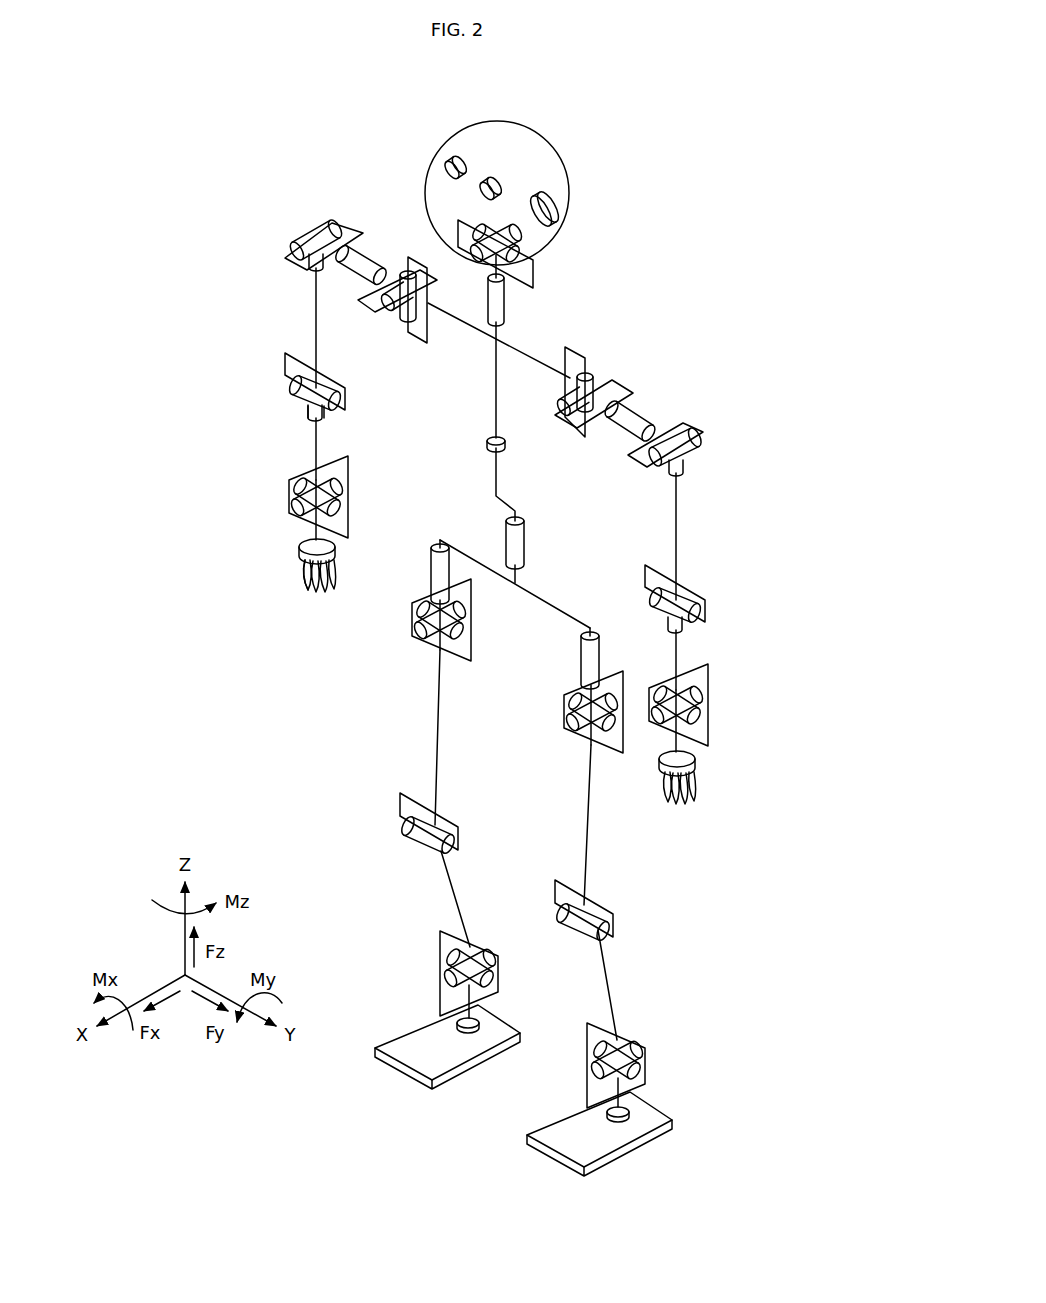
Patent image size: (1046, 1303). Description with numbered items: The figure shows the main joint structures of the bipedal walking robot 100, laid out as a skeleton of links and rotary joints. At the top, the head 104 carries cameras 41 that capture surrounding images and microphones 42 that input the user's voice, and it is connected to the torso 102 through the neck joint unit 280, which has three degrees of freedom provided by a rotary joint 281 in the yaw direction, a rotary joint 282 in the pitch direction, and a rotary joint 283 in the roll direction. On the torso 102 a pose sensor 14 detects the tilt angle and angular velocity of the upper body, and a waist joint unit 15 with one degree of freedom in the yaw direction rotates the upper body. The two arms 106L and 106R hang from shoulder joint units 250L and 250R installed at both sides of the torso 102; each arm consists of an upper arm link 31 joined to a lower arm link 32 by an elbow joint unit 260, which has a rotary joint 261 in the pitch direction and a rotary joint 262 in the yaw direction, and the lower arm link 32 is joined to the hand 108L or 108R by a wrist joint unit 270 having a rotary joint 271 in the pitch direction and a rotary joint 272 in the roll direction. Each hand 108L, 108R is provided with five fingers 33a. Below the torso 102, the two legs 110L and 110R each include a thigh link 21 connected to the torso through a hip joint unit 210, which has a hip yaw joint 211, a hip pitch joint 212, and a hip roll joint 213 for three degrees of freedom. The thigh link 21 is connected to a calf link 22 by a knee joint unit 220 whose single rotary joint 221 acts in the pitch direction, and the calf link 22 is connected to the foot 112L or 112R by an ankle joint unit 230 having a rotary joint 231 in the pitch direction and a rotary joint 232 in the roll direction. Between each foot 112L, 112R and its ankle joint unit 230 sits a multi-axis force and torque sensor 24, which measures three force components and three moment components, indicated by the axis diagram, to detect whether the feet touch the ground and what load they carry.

The robot 100 is at (766, 128).
The torso 102 is at (495, 390).
The head 104 is at (560, 143).
The right arm 106R is at (212, 372).
The left arm 106L is at (763, 573).
The right hand 108R is at (290, 573).
The left hand 108L is at (713, 773).
The right leg 110R is at (343, 769).
The left leg 110L is at (643, 859).
The right foot 112R is at (401, 1067).
The left foot 112L is at (557, 1150).
The pose sensor 14 is at (507, 448).
The waist joint unit 15 is at (525, 542).
The thigh link 21 is at (433, 748).
The calf link 22 is at (450, 896).
The multi-axis force and torque sensor 24 is at (470, 1032).
The upper arm link 31 is at (314, 305).
The lower arm link 32 is at (314, 438).
The finger 33a is at (308, 579).
The camera 41 is at (480, 195).
The microphone 42 is at (556, 210).
The hip joint unit 210 is at (398, 627).
The hip yaw joint 211 is at (437, 568).
The hip pitch joint 212 is at (470, 628).
The hip roll joint 213 is at (425, 641).
The knee joint unit 220 is at (393, 842).
The rotary joint in the pitch direction 221 is at (430, 832).
The ankle joint unit 230 is at (423, 970).
The rotary joint in the pitch direction 231 is at (490, 978).
The rotary joint in the roll direction 232 is at (470, 960).
The right shoulder joint unit 250R is at (313, 212).
The left shoulder joint unit 250L is at (643, 374).
The elbow joint unit 260 is at (280, 355).
The rotary joint in the pitch direction 261 is at (318, 386).
The rotary joint in the yaw direction 262 is at (325, 410).
The wrist joint unit 270 is at (282, 516).
The rotary joint in the pitch direction 271 is at (335, 500).
The rotary joint in the roll direction 272 is at (328, 485).
The neck joint unit 280 is at (548, 287).
The rotary joint in the yaw direction 281 is at (503, 306).
The rotary joint in the pitch direction 282 is at (525, 243).
The rotary joint in the roll direction 283 is at (470, 248).